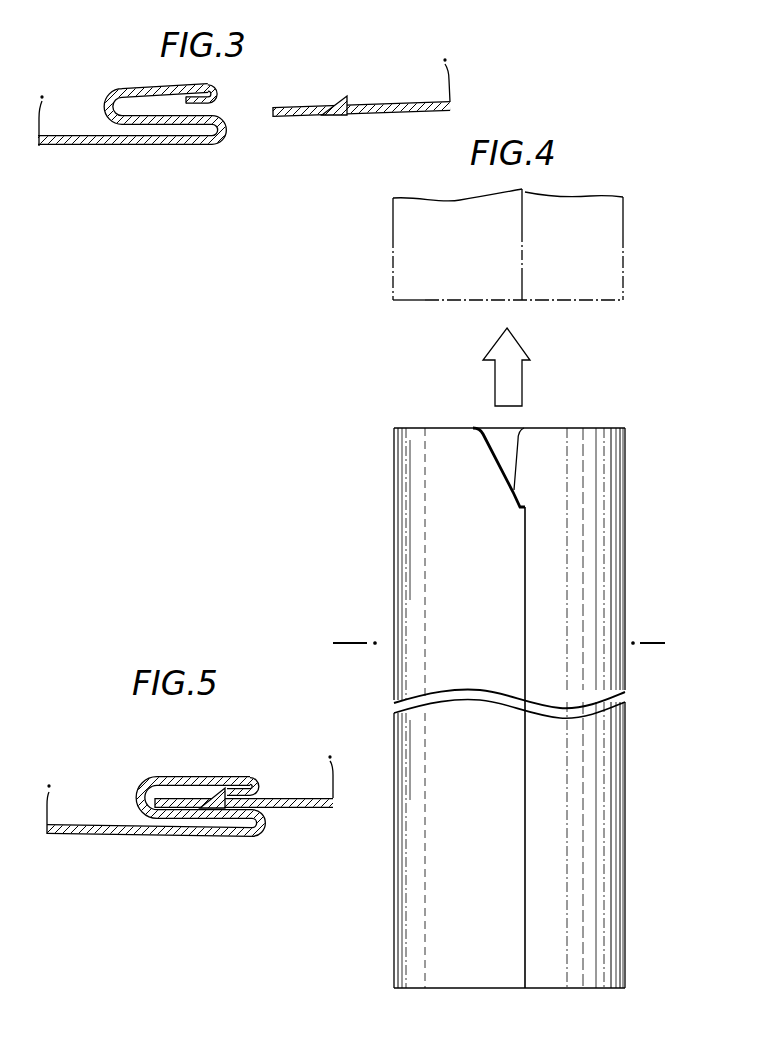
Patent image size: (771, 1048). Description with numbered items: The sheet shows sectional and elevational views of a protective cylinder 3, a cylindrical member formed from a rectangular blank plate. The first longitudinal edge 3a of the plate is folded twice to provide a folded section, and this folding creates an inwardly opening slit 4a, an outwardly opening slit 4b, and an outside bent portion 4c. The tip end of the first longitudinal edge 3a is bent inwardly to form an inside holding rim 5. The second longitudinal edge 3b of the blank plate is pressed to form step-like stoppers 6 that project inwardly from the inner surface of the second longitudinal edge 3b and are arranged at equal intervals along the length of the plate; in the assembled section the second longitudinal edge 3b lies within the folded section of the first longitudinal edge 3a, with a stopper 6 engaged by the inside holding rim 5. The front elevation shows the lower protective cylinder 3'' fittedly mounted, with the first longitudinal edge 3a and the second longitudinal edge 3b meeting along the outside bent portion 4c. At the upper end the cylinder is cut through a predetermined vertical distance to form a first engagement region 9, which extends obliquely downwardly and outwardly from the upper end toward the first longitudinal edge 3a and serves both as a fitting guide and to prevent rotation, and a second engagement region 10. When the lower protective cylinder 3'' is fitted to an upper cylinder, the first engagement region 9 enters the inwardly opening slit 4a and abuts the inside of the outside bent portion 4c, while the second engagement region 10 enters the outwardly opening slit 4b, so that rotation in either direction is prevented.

In FIG. 3, the protective cylinder 3 is at (244, 106).
In FIG. 5, the protective cylinder 3 is at (189, 818).
In FIG. 3, the first longitudinal edge 3a is at (200, 146).
In FIG. 4, the first longitudinal edge 3a is at (500, 296).
In FIG. 5, the first longitudinal edge 3a is at (158, 836).
In FIG. 3, the second longitudinal edge 3b is at (297, 116).
In FIG. 4, the second longitudinal edge 3b is at (545, 290).
In FIG. 5, the second longitudinal edge 3b is at (178, 797).
In FIG. 4, the lower protective cylinder 3'' is at (501, 588).
In FIG. 3, the inwardly opening slit 4a is at (133, 134).
In FIG. 5, the inwardly opening slit 4a is at (205, 823).
In FIG. 3, the outwardly opening slit 4b is at (148, 100).
In FIG. 5, the outwardly opening slit 4b is at (148, 793).
In FIG. 3, the outside bent portion 4c is at (227, 126).
In FIG. 4, the outside bent portion 4c is at (524, 236).
In FIG. 5, the outside bent portion 4c is at (273, 826).
In FIG. 3, the inside holding rim 5 is at (216, 101).
In FIG. 5, the inside holding rim 5 is at (238, 780).
In FIG. 3, the step-like stoppers 6 is at (343, 100).
In FIG. 5, the step-like stoppers 6 is at (203, 790).
In FIG. 4, the first engagement region 9 is at (493, 428).
In FIG. 4, the second engagement region 10 is at (522, 430).